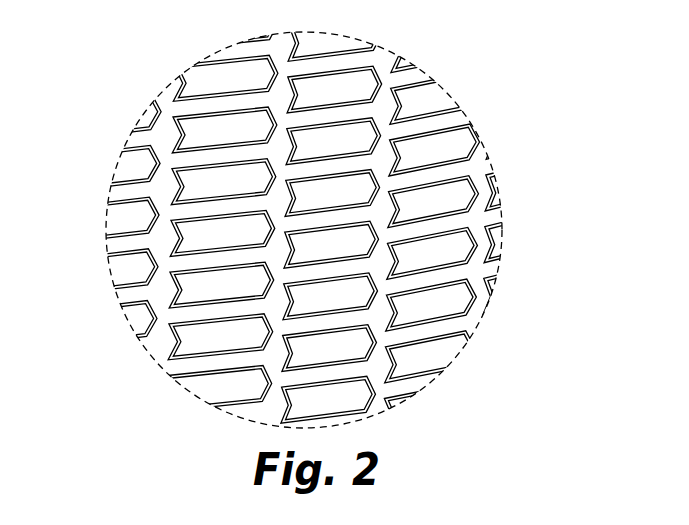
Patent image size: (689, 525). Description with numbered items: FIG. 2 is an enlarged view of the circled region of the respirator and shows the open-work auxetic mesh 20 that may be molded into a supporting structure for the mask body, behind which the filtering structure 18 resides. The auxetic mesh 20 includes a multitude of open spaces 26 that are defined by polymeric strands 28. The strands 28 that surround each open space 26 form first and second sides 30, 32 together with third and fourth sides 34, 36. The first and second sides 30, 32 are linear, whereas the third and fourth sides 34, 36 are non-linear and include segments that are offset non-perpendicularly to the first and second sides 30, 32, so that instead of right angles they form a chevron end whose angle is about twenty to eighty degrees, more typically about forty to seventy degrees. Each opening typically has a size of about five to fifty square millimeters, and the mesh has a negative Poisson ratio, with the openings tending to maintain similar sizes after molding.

The filtering structure 18 is at (188, 122).
The auxetic mesh 20 is at (491, 181).
The open space 26 is at (337, 203).
The polymeric strand 28 is at (420, 112).
The first side 30 is at (435, 277).
The second side 32 is at (430, 330).
The third side 34 is at (385, 320).
The fourth side 36 is at (485, 267).